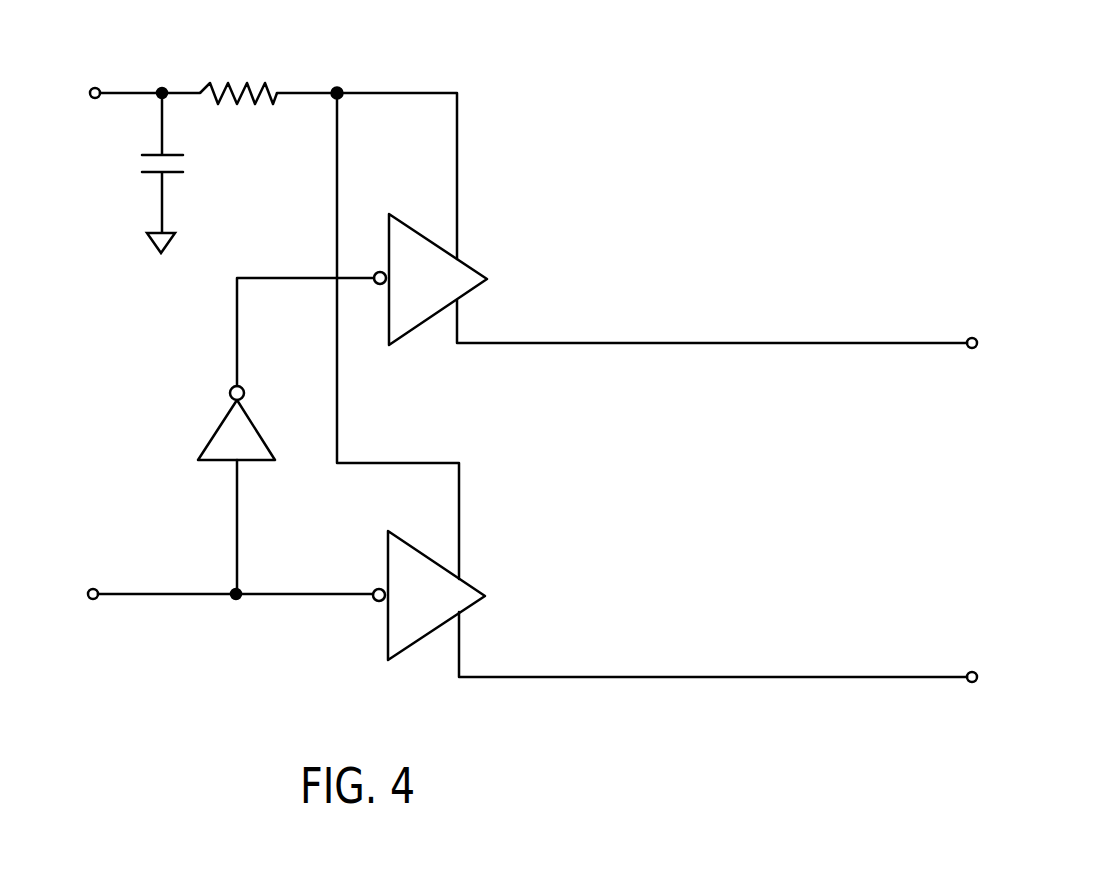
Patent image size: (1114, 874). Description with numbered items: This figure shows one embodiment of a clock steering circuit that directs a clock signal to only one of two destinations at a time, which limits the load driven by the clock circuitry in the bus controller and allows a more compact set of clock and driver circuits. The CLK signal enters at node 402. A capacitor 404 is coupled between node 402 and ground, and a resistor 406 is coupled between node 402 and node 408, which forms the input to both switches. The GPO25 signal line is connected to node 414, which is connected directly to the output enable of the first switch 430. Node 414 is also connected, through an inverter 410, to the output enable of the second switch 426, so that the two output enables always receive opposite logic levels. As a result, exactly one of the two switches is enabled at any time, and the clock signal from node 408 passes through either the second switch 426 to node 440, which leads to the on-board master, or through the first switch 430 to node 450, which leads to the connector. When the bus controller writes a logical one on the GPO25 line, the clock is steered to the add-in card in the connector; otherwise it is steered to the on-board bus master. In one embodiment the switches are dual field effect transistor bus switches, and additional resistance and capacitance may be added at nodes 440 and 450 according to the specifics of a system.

The node 402 is at (95, 99).
The capacitor 404 is at (170, 175).
The resistor 406 is at (240, 80).
The node 408 is at (338, 88).
The inverter 410 is at (222, 424).
The node 414 is at (89, 600).
The tri-state buffer to on-board master 426 is at (417, 228).
The first switch 430 is at (417, 543).
The node 440 is at (967, 349).
The node 450 is at (967, 683).